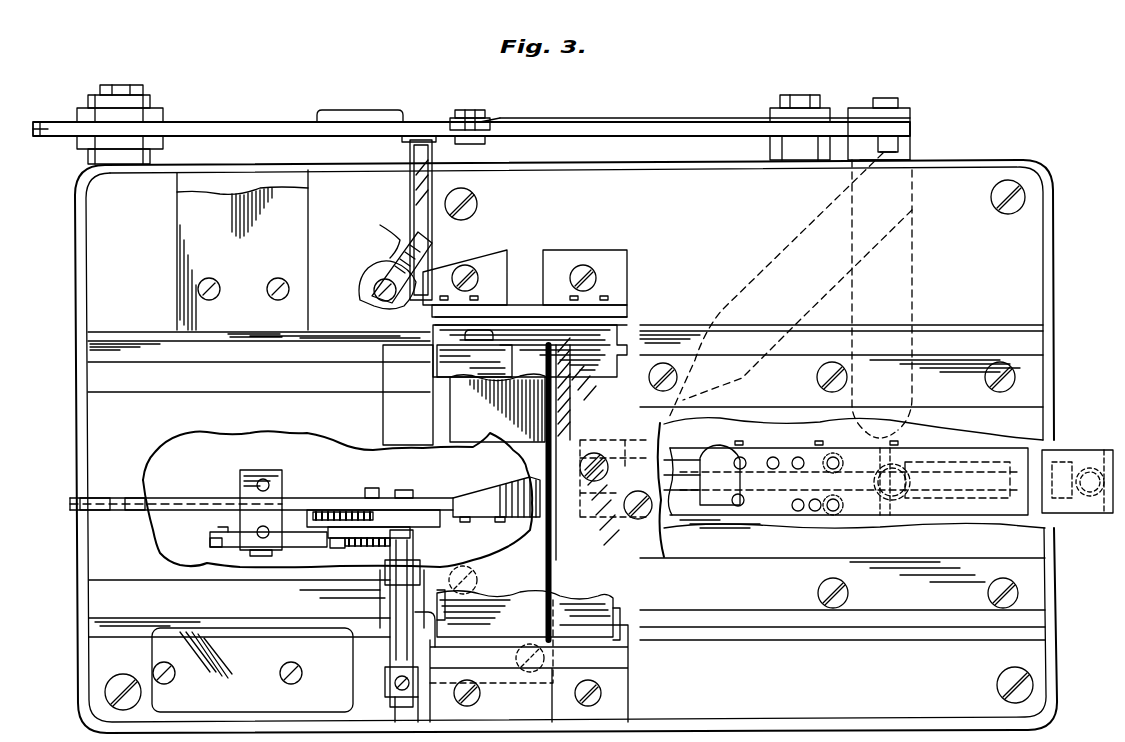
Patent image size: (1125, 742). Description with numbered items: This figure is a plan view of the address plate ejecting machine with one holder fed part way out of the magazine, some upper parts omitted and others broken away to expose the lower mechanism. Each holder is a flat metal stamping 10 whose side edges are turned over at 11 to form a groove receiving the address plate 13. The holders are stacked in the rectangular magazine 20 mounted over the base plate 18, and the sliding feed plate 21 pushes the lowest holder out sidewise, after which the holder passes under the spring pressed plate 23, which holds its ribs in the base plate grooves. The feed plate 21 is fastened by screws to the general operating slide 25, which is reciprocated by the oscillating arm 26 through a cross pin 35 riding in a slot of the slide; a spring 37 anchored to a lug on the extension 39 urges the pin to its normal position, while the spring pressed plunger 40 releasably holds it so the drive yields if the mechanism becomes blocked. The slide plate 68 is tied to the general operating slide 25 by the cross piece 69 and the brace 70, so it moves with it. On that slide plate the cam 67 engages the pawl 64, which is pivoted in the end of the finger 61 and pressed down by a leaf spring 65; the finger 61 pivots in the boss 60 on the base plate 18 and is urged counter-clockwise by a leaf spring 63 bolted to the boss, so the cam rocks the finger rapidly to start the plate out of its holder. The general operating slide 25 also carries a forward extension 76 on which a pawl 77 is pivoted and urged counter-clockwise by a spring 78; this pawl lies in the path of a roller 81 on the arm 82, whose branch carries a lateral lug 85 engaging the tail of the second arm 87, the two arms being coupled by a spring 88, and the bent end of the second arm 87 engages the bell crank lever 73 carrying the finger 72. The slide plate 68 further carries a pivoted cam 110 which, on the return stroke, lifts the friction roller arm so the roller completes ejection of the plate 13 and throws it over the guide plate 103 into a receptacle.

The flat metal stamping 10 is at (583, 370).
The turned over side edges 11 is at (618, 348).
The address plate 13 is at (505, 366).
The base plate 18 is at (92, 224).
The magazine 20 is at (524, 312).
The feed plate 21 is at (648, 538).
The spring pressed plate 23 is at (242, 632).
The general operating slide 25 is at (740, 480).
The arm 26 is at (830, 482).
The cross pin 35 is at (852, 520).
The spring 37 is at (905, 480).
The extension 39 is at (1094, 458).
The spring pressed plunger 40 is at (875, 470).
The boss 60 is at (372, 262).
The finger 61 is at (418, 300).
The leaf spring 63 is at (398, 250).
The pawl 64 is at (410, 146).
The leaf spring 65 is at (414, 172).
The cam 67 is at (452, 136).
The slide plate 68 is at (220, 126).
The cross piece 69 is at (900, 154).
The brace 70 is at (770, 270).
The finger 72 is at (385, 648).
The bell crank lever 73 is at (402, 548).
The forward extension 76 is at (181, 506).
The pawl 77 is at (408, 514).
The spring 78 is at (340, 512).
The roller 81 is at (380, 494).
The arm 82 is at (296, 510).
The lateral lug 85 is at (214, 544).
The second arm 87 is at (320, 542).
The spring 88 is at (356, 546).
The guide plate 103 is at (300, 214).
The pivoted cam 110 is at (362, 122).